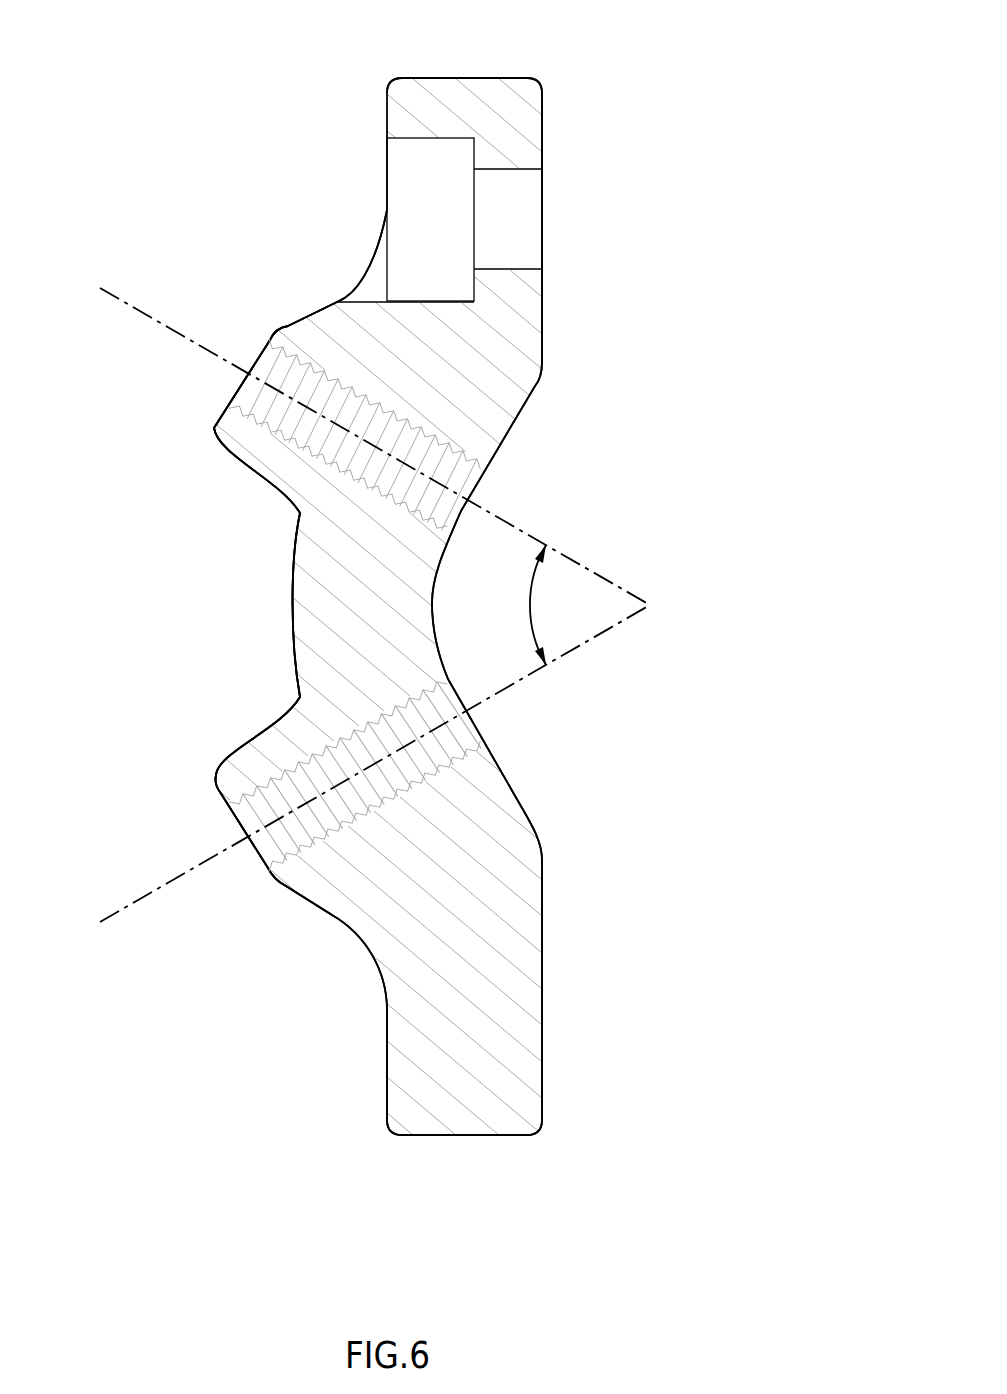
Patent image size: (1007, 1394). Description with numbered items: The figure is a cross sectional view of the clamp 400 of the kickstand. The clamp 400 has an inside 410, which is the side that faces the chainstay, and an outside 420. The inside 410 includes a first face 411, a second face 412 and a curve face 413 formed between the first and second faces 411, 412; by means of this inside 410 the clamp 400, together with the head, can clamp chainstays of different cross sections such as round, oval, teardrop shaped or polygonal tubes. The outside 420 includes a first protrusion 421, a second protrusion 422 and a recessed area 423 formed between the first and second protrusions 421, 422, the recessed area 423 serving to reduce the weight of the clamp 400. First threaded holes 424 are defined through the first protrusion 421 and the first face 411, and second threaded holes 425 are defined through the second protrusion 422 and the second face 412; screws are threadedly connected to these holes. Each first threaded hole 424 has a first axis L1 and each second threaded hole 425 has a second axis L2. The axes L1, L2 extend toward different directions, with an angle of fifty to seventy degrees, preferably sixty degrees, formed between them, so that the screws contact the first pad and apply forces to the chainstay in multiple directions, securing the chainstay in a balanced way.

The clamp 400 is at (238, 203).
The inside 410 is at (543, 123).
The first face 411 is at (523, 408).
The second face 412 is at (520, 801).
The curve face 413 is at (433, 613).
The outside 420 is at (387, 108).
The first protrusion 421 is at (218, 437).
The second protrusion 422 is at (228, 773).
The recessed area 423 is at (292, 580).
The first threaded holes 424 is at (236, 410).
The second threaded holes 425 is at (248, 790).
The first axis L1 is at (355, 430).
The second axis L2 is at (355, 778).